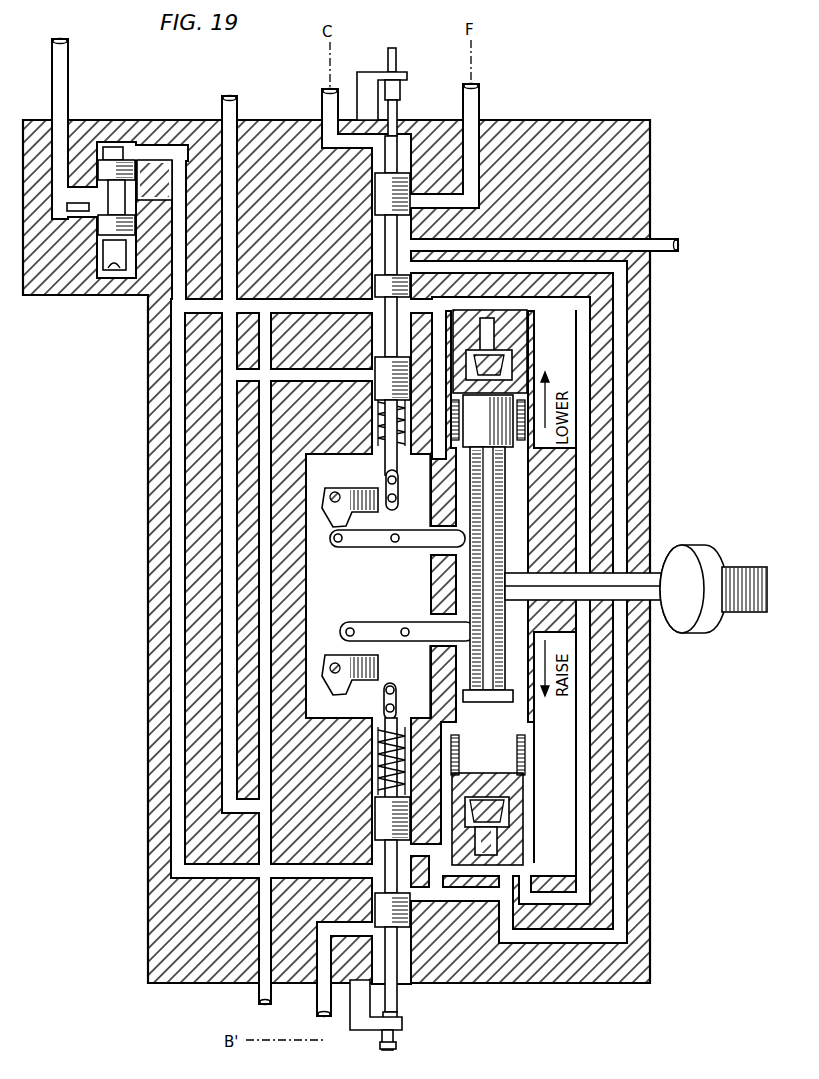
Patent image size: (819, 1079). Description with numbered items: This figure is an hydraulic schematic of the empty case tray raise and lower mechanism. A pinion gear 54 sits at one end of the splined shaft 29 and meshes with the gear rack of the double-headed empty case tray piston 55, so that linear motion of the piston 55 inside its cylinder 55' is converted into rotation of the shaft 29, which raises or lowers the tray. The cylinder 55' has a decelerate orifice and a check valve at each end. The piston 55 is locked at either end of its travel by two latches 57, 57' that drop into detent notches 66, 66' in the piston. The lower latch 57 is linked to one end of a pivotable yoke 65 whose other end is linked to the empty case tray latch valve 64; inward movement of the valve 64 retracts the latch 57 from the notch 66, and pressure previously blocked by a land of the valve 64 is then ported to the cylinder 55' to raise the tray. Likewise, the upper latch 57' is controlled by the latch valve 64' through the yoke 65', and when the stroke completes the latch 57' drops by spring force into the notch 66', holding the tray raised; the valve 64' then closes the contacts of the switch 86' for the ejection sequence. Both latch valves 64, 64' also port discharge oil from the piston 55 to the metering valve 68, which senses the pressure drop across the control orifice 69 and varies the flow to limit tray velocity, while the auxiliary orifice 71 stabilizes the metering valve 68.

The metering valve 68 is at (115, 153).
The auxiliary orifice 71 is at (78, 215).
The control orifice 69 is at (152, 200).
The switch 86' is at (402, 92).
The latch valve 64' is at (365, 305).
The yoke 65' is at (360, 491).
The detent notch 66' is at (449, 488).
The empty case tray piston 55 is at (511, 436).
The cylinder 55' is at (514, 574).
The pinion gear 54 is at (522, 567).
The latch 57' is at (397, 553).
The latch 57 is at (407, 612).
The yoke 65 is at (364, 682).
The detent notch 66 is at (445, 679).
The empty case tray latch valve 64 is at (369, 884).
The splined shaft 29 is at (733, 604).